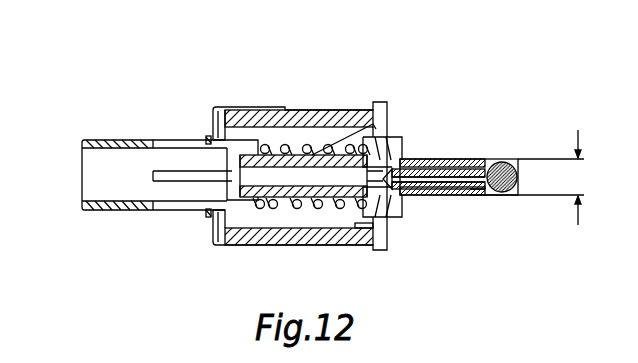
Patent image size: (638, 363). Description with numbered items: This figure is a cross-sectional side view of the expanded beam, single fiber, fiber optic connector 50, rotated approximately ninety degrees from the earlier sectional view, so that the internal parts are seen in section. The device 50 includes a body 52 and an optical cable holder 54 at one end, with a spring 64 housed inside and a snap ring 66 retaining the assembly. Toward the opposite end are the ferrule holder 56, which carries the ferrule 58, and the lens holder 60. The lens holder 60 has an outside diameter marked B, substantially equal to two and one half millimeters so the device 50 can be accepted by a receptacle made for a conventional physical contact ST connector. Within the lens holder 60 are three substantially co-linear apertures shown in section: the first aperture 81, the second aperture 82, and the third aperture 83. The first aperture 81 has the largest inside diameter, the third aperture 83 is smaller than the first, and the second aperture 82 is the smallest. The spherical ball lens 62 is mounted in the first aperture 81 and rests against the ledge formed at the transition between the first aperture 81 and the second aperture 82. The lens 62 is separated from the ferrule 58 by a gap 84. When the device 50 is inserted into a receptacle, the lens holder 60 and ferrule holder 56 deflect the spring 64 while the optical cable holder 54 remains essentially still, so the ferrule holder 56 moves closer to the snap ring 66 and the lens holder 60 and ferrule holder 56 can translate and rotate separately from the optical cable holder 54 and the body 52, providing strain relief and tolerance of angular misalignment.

The expanded beam, single fiber, fiber optic connector 50 is at (206, 83).
The body 52 is at (315, 108).
The optical cable holder 54 is at (106, 140).
The ferrule holder 56 is at (417, 162).
The ferrule 58 is at (391, 177).
The lens holder 60 is at (485, 161).
The lens 62 is at (522, 197).
The spring 64 is at (272, 204).
The snap ring 66 is at (206, 215).
The first aperture 81 is at (523, 157).
The second aperture 82 is at (498, 162).
The third aperture 83 is at (425, 162).
The gap 84 is at (485, 198).